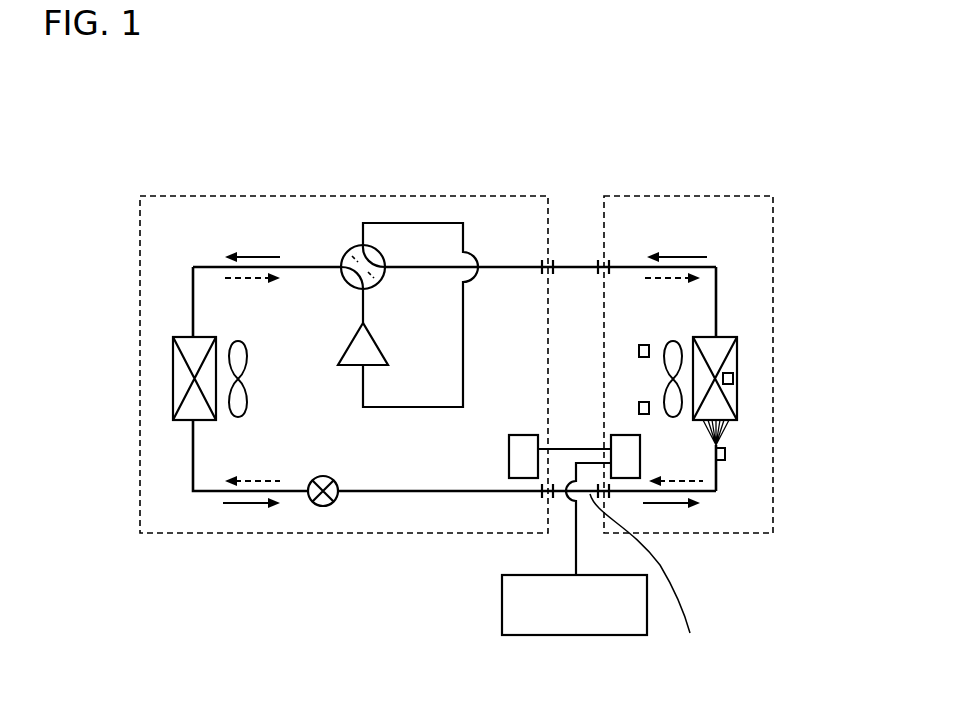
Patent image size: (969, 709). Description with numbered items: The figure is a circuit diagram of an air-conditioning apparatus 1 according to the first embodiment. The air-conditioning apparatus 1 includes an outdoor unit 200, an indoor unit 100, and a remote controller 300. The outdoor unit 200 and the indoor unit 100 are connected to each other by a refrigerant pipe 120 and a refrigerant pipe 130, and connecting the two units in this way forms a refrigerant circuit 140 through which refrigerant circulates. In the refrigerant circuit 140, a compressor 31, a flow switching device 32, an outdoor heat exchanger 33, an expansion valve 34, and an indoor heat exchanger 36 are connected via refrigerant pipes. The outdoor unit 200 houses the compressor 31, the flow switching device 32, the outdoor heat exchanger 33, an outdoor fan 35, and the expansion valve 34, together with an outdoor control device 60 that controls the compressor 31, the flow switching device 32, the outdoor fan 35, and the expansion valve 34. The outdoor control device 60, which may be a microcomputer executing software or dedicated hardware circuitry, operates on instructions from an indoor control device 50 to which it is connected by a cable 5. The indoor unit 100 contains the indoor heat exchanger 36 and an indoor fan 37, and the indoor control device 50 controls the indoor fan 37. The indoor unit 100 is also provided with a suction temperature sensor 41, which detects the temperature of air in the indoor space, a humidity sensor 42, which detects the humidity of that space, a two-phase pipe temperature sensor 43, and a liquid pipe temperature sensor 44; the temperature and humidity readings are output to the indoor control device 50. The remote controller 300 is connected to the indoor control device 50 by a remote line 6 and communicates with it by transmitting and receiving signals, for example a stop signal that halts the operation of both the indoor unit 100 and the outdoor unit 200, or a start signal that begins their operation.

The air-conditioning apparatus 1 is at (748, 161).
The cable 5 is at (578, 445).
The remote line 6 is at (576, 554).
The compressor 31 is at (381, 336).
The flow switching device 32 is at (351, 253).
The outdoor heat exchanger 33 is at (182, 421).
The expansion valve 34 is at (336, 481).
The outdoor fan 35 is at (249, 351).
The indoor heat exchanger 36 is at (727, 337).
The indoor fan 37 is at (675, 342).
The suction temperature sensor 41 is at (641, 346).
The humidity sensor 42 is at (641, 402).
The two-phase pipe temperature sensor 43 is at (734, 378).
The liquid pipe temperature sensor 44 is at (726, 459).
The indoor control device 50 is at (641, 445).
The outdoor control device 60 is at (509, 444).
The indoor unit 100 is at (735, 534).
The refrigerant pipe 120 is at (580, 262).
The refrigerant pipe 130 is at (652, 576).
The refrigerant circuit 140 is at (202, 256).
The outdoor unit 200 is at (203, 534).
The remote controller 300 is at (502, 590).